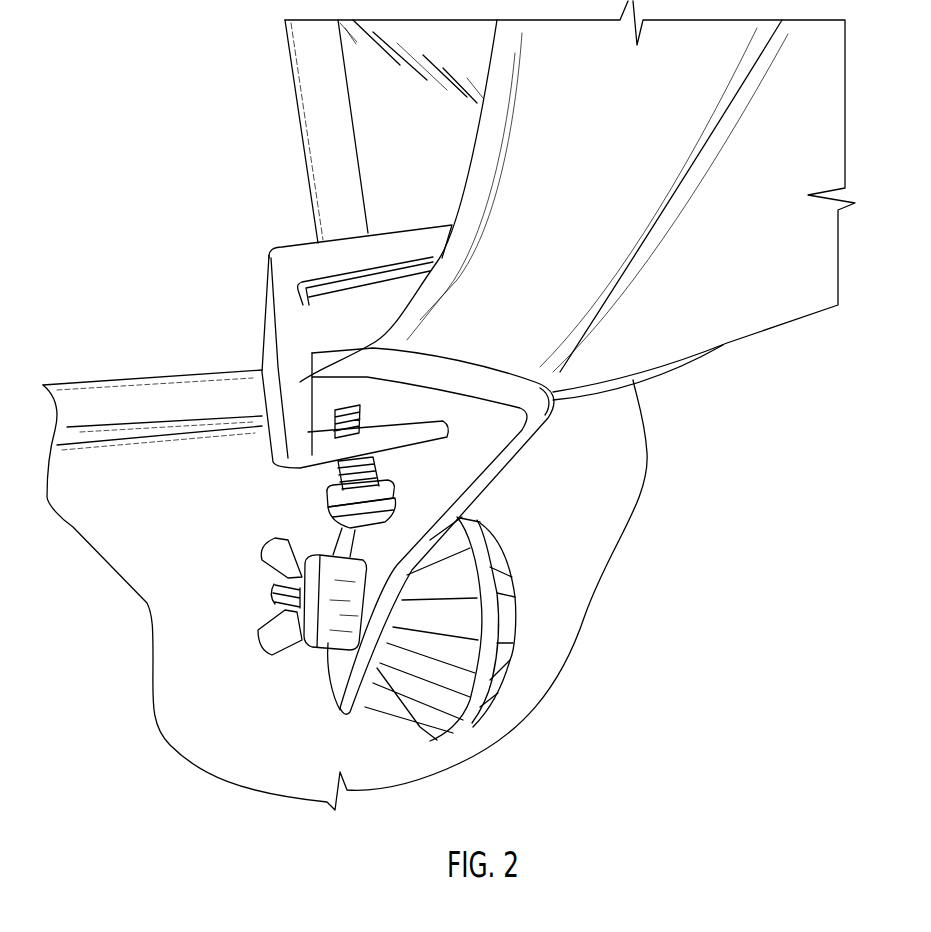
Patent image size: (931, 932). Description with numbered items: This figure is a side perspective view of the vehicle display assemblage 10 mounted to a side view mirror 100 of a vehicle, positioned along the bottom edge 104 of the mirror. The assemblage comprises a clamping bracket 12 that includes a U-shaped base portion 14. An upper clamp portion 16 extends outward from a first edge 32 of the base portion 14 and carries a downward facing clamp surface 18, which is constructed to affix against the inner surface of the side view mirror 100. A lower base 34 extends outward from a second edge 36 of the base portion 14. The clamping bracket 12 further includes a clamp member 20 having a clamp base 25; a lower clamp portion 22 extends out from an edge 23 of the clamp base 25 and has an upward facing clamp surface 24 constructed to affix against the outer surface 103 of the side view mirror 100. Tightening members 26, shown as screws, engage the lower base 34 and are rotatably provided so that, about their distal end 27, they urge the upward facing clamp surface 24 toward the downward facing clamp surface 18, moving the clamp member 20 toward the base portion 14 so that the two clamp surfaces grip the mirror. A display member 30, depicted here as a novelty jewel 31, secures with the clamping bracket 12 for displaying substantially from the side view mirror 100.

The vehicle display assemblage 10 is at (247, 654).
The clamping bracket 12 is at (231, 271).
The base portion 14 is at (263, 355).
The upper clamp portion 16 is at (348, 250).
The downward facing clamp surface 18 is at (300, 382).
The clamp member 20 is at (497, 458).
The lower clamp portion 22 is at (472, 367).
The edge 23 is at (540, 400).
The upward facing clamp surface 24 is at (452, 362).
The clamp base 25 is at (433, 492).
The tightening members 26 is at (330, 548).
The distal end 27 is at (290, 462).
The display members 30 is at (427, 685).
The novelty jewel 31 is at (500, 658).
The first edge 32 is at (287, 278).
The lower base 34 is at (400, 447).
The second edge 36 is at (300, 470).
The side view mirror 100 is at (586, 252).
The outer surface 103 is at (627, 147).
The bottom edge 104 is at (482, 165).